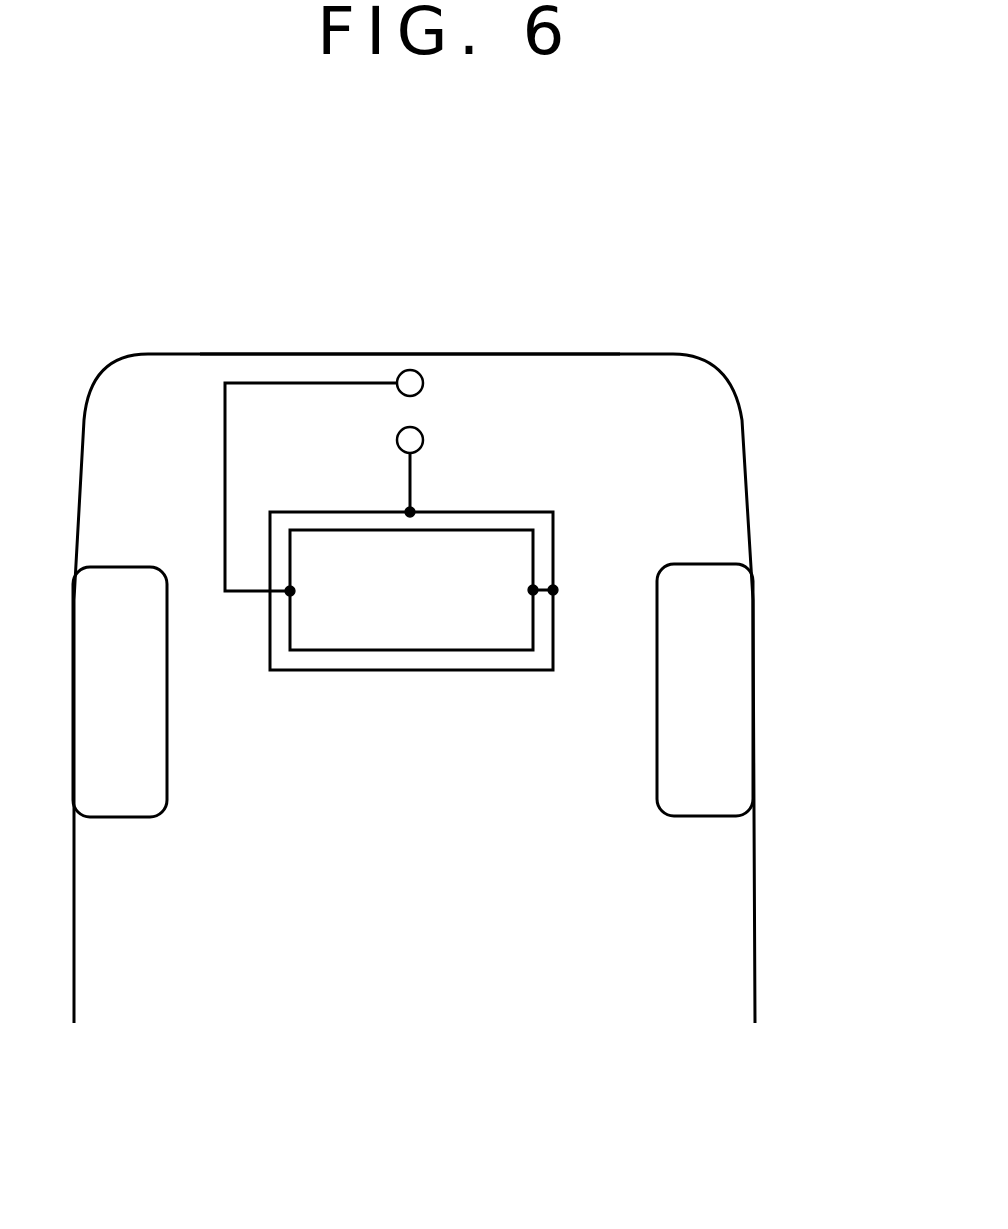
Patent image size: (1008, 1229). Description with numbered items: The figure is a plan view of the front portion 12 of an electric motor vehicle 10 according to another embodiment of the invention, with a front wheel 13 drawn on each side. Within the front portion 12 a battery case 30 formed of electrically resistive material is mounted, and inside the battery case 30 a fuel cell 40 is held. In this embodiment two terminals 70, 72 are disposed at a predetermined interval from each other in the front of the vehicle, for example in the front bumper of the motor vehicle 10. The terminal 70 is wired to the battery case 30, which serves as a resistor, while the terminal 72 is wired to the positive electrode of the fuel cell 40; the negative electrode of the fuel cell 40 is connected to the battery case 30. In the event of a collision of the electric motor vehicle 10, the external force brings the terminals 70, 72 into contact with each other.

The electric motor vehicle 10 is at (798, 416).
The front portion 12 is at (530, 352).
The front wheel 13 is at (168, 785).
The battery case 30 is at (515, 511).
The fuel cell 40 is at (441, 652).
The terminal 70 is at (424, 440).
The terminal 72 is at (424, 383).